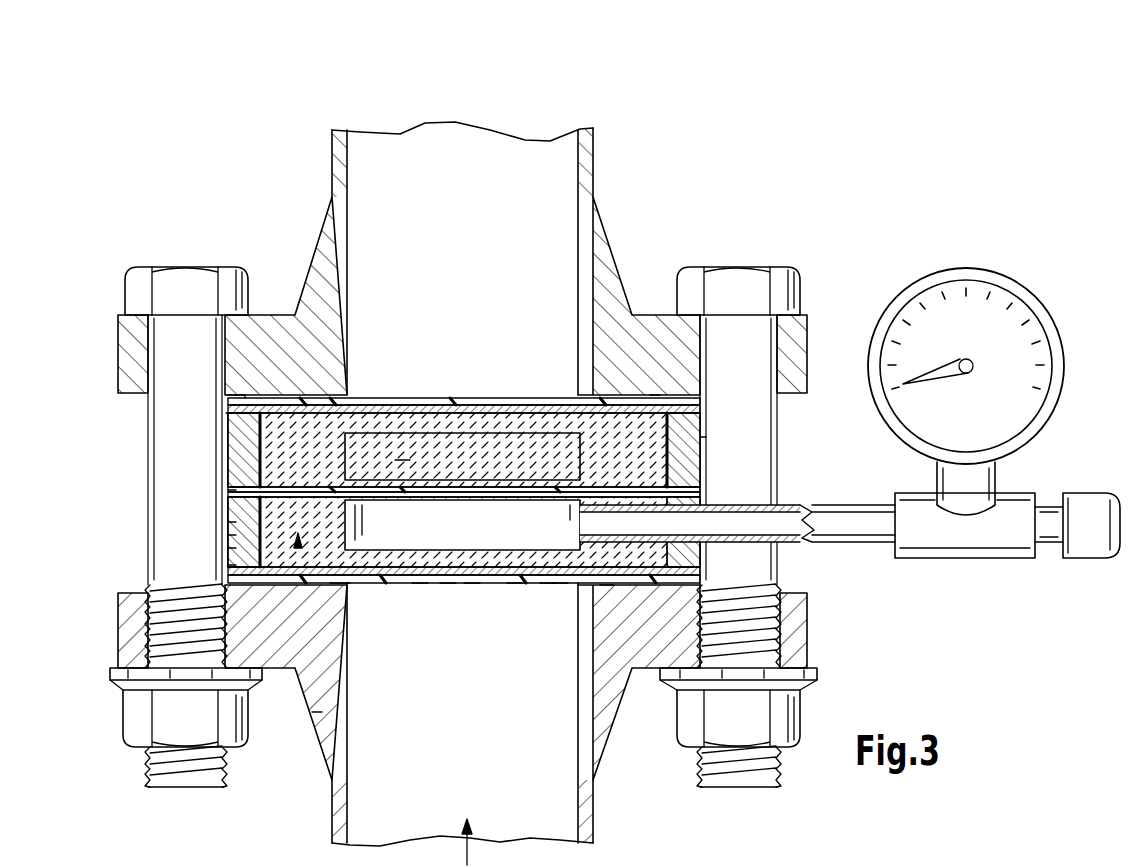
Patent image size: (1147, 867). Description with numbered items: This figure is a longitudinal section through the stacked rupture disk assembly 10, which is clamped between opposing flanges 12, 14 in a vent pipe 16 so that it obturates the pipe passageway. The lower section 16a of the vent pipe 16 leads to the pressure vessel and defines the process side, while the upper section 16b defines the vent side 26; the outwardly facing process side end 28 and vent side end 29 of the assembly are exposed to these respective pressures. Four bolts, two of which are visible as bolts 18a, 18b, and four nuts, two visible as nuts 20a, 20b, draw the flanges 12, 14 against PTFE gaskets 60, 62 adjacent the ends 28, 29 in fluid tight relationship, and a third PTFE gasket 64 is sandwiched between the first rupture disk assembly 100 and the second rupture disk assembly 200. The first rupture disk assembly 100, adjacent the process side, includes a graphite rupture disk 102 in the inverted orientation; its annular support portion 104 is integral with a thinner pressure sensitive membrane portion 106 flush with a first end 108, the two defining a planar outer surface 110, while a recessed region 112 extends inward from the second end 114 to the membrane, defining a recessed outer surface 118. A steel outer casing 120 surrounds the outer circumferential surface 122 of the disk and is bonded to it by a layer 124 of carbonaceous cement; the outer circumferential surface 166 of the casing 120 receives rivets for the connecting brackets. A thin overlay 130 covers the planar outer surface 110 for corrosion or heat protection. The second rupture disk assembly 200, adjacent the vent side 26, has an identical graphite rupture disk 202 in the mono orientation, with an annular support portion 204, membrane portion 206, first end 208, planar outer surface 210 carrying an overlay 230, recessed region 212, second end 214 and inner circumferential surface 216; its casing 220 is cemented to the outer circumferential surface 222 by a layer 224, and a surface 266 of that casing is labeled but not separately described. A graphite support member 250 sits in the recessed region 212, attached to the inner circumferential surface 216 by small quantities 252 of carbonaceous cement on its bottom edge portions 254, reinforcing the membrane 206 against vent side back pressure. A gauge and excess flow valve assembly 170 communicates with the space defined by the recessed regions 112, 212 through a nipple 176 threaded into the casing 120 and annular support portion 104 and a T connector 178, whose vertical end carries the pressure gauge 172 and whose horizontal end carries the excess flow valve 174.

The stacked rupture disk assembly 10 is at (968, 203).
The flange 12 is at (600, 302).
The flange 14 is at (596, 705).
The vent pipe 16 is at (540, 128).
The lower section of vent pipe 16a is at (458, 816).
The upper section of vent pipe 16b is at (470, 207).
The bolt 18a is at (190, 298).
The bolt 18b is at (795, 300).
The nut 20a is at (189, 722).
The nut 20b is at (753, 720).
The vent side 26 is at (469, 105).
The process side end 28 is at (398, 612).
The vent side end 29 is at (510, 385).
The PTFE gasket 60 is at (236, 590).
The PTFE gasket 62 is at (242, 398).
The third PTFE gasket 64 is at (228, 490).
The first rupture disk assembly 100 is at (484, 408).
The graphite rupture disk 102 is at (318, 715).
The annular support portion 104 is at (320, 548).
The pressure sensitive membrane portion 106 is at (448, 585).
The first end of annular support portion 108 is at (607, 585).
The planar outer surface 110 is at (560, 585).
The recessed region 112 is at (420, 585).
The second end of annular support portion 114 is at (298, 548).
The recessed outer surface 118 is at (515, 585).
The outer casing 120 is at (232, 548).
The outer circumferential surface 122 is at (225, 523).
The layer of carbonaceous cement 124 is at (236, 565).
The overlay 130 is at (548, 585).
The outer circumferential surface of casing 166 is at (227, 535).
The gauge and excess flow valve assembly 170 is at (994, 445).
The pressure gauge 172 is at (1050, 322).
The excess flow valve 174 is at (1087, 540).
The nipple 176 is at (873, 528).
The T connector 178 is at (987, 535).
The second rupture disk assembly 200 is at (465, 380).
The graphite rupture disk 202 is at (653, 397).
The annular support portion 204 is at (703, 297).
The pressure sensitive membrane portion 206 is at (482, 407).
The first end of annular support portion 208 is at (335, 398).
The planar outer surface 210 is at (538, 400).
The recessed region 212 is at (515, 445).
The second end of annular support portion 214 is at (495, 527).
The inner circumferential surface 216 is at (590, 440).
The outer casing 220 is at (253, 425).
The outer circumferential surface 222 is at (228, 462).
The layer of carbonaceous cement 224 is at (227, 415).
The overlay 230 is at (418, 398).
The support member 250 is at (402, 460).
The small quantities of carbonaceous cement 252 is at (363, 485).
The bottom edge portions 254 is at (362, 402).
The middle plate 266 is at (230, 490).